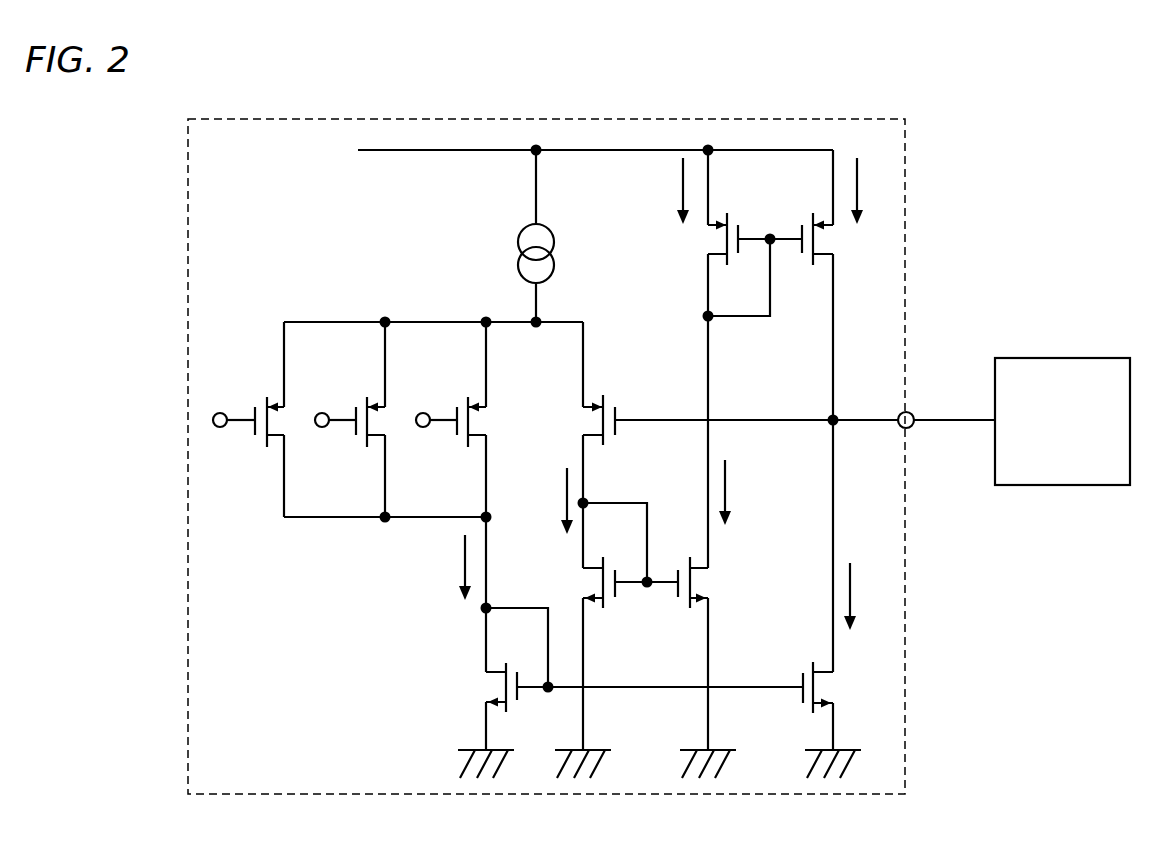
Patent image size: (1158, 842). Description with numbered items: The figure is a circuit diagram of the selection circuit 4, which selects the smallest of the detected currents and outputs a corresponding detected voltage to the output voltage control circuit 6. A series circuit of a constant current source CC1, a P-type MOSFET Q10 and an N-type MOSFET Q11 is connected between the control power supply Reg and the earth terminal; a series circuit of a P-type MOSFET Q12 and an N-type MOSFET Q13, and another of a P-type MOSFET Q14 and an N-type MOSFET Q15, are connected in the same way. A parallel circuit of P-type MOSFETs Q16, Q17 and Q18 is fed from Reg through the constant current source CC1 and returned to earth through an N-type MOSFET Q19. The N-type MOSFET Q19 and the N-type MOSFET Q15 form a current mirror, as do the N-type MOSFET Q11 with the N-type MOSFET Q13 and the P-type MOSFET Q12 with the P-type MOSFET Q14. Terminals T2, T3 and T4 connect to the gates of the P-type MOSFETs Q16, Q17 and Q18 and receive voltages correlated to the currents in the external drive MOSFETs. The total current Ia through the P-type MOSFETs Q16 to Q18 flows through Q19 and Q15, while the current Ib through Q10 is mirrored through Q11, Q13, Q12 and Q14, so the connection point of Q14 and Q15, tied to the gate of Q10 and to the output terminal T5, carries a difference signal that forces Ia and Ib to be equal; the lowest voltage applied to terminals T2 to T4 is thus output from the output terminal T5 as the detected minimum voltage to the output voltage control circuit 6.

The selection circuit 4 is at (550, 101).
The output voltage control circuit 6 is at (1021, 359).
The constant current source CC1 is at (547, 245).
The P-type MOSFET Q10 is at (585, 420).
The N-type MOSFET Q11 is at (581, 582).
The P-type MOSFET Q12 is at (701, 239).
The N-type MOSFET Q13 is at (710, 582).
The P-type MOSFET Q14 is at (834, 239).
The N-type MOSFET Q15 is at (835, 687).
The P-type MOSFET Q16 is at (467, 410).
The P-type MOSFET Q17 is at (365, 410).
The P-type MOSFET Q18 is at (263, 410).
The N-type MOSFET Q19 is at (486, 687).
The terminal T2 is at (431, 432).
The terminal T3 is at (329, 432).
The terminal T4 is at (228, 432).
The output terminal T5 is at (920, 409).